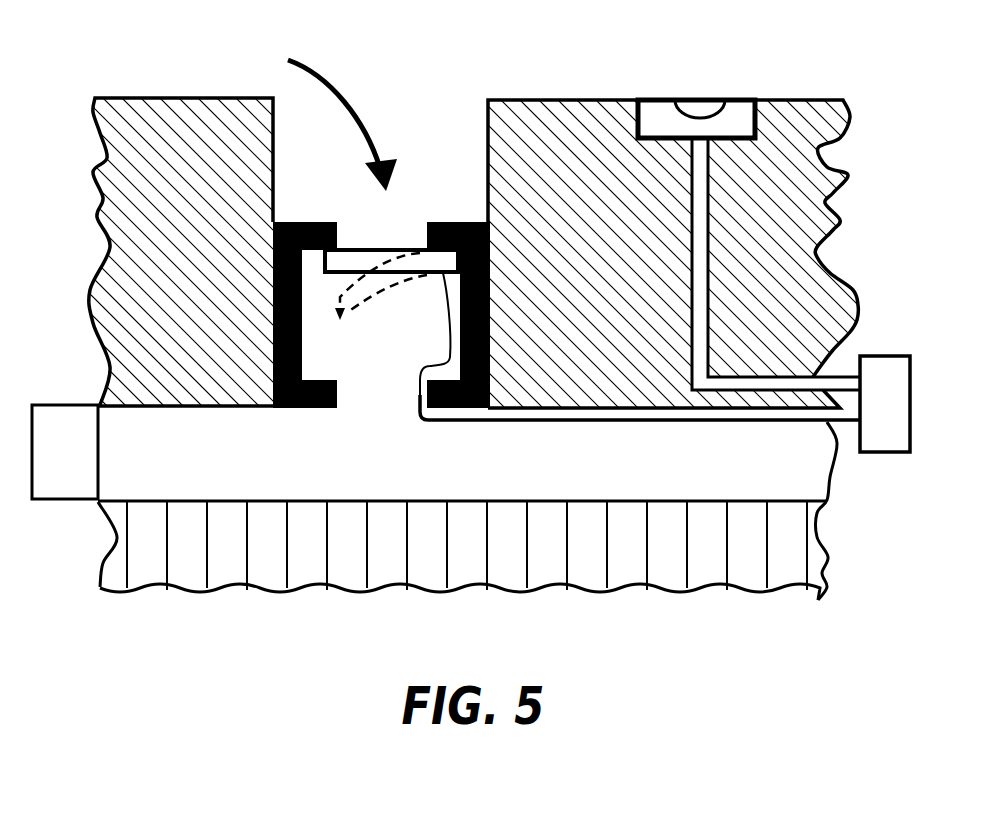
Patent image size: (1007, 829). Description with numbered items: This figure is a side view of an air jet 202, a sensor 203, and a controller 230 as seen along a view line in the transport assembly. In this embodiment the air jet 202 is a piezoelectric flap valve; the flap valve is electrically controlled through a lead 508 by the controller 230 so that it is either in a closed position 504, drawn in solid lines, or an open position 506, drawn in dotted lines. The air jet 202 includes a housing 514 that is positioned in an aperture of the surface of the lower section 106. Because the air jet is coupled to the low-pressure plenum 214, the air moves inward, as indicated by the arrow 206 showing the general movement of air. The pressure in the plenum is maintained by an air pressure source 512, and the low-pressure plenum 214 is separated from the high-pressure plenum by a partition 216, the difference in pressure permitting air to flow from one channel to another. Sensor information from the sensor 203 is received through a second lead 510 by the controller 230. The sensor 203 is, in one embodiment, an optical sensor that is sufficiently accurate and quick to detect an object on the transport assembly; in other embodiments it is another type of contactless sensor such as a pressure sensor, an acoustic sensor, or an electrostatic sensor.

The lower section 106 is at (128, 100).
The arrow 206 is at (287, 67).
The air jet 202 is at (350, 204).
The closed position 504 is at (384, 250).
The open position 506 is at (378, 290).
The housing 514 is at (335, 393).
The lead 508 is at (570, 415).
The lead 510 is at (842, 382).
The sensor 203 is at (700, 100).
The controller 230 is at (897, 432).
The air pressure source 512 is at (63, 425).
The low-pressure plenum 214 is at (792, 480).
The partition 216 is at (813, 568).